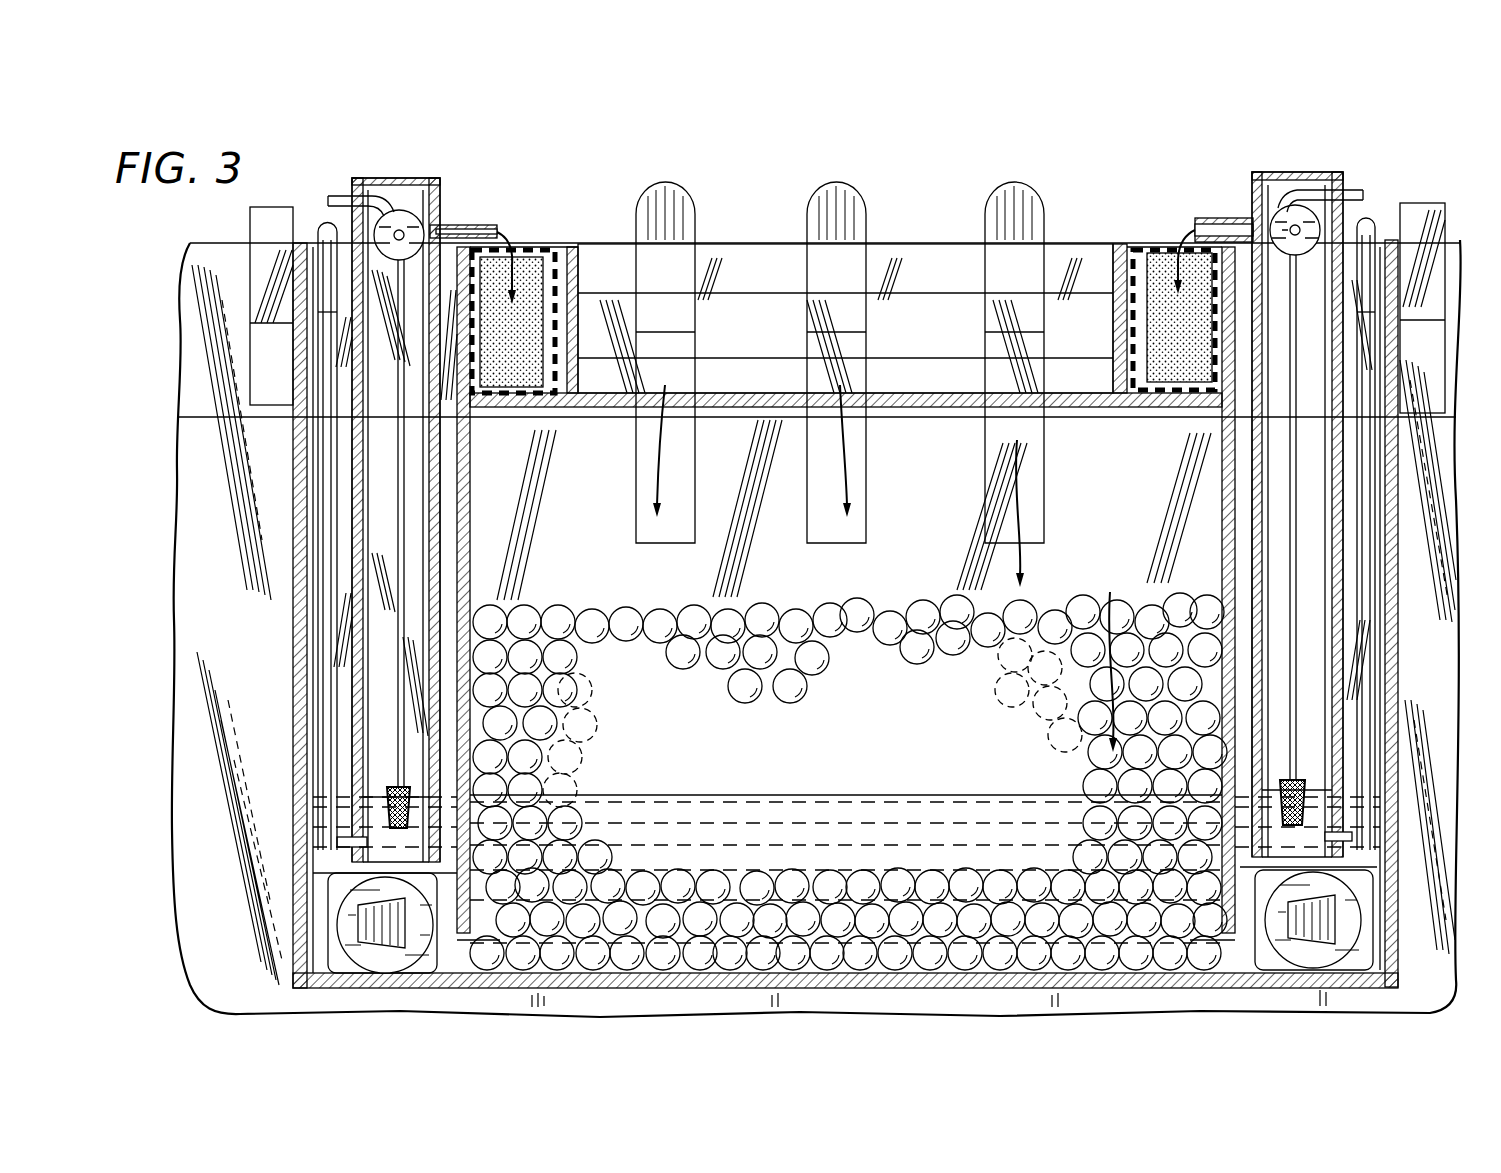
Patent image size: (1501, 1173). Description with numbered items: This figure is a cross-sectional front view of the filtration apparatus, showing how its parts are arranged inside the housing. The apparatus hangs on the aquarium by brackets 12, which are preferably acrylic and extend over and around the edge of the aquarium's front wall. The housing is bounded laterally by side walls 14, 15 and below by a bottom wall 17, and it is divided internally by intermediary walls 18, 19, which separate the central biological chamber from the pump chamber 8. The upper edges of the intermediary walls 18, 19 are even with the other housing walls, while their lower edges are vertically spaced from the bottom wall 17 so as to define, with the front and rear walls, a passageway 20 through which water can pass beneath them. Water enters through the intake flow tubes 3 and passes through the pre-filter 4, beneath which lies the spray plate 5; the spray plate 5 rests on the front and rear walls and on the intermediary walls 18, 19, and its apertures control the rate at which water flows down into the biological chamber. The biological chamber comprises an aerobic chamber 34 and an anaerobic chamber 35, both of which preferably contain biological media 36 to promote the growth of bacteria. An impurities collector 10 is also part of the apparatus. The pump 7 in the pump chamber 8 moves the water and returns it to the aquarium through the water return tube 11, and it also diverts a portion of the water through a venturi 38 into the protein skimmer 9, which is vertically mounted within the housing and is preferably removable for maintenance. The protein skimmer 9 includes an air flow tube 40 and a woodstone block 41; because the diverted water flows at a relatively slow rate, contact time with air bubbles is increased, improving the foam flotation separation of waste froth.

The intake flow tube 3 is at (858, 206).
The pre-filter 4 is at (766, 266).
The spray plate 5 is at (597, 410).
The pump 7 is at (367, 922).
The pump chamber 8 is at (1357, 824).
The protein skimmer 9 is at (377, 708).
The impurities collector 10 is at (532, 276).
The water return tube 11 is at (1368, 216).
The bracket 12 is at (1440, 228).
The side wall 14 is at (297, 546).
The side wall 15 is at (1395, 632).
The bottom wall 17 is at (1418, 1015).
The intermediary wall 18 is at (480, 596).
The intermediary wall 19 is at (1235, 713).
The passageway 20 is at (440, 988).
The aerobic chamber 34 is at (1108, 745).
The anaerobic chamber 35 is at (1197, 891).
The biological media 36 is at (1184, 624).
The venturi 38 is at (337, 843).
The air flow tube 40 is at (400, 474).
The woodstone block 41 is at (384, 808).